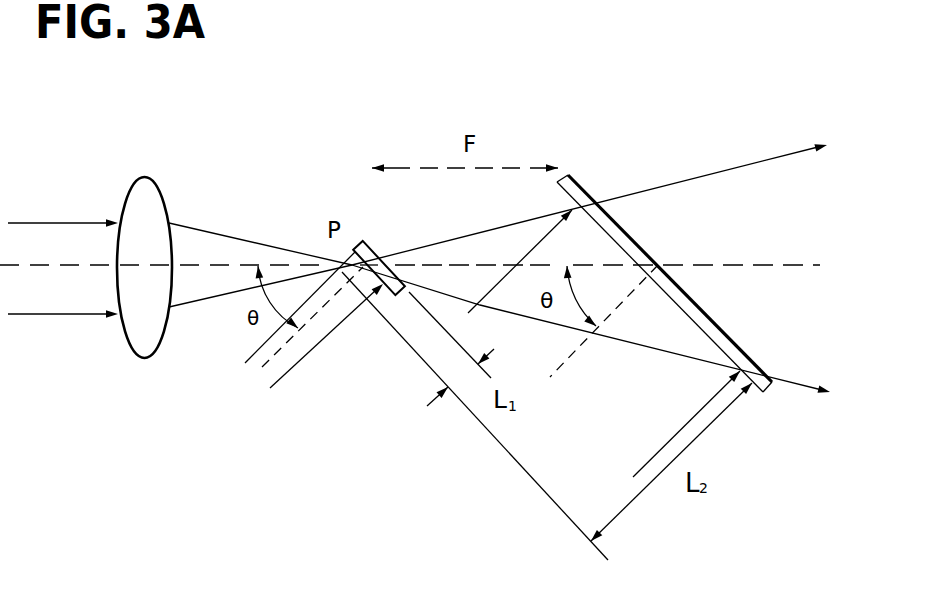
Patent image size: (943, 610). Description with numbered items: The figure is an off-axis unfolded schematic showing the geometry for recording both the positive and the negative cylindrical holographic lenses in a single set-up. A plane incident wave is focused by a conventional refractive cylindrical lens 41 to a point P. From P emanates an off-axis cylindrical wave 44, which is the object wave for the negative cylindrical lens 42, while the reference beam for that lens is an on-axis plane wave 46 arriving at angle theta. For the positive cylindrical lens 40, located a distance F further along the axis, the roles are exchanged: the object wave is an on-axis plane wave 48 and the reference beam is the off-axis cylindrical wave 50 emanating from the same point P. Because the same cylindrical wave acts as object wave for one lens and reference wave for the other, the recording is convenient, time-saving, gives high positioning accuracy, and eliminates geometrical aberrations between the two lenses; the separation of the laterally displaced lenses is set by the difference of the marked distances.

The positive cylindrical lens 40 is at (583, 190).
The refractive cylindrical lens 41 is at (144, 177).
The negative cylindrical lens 42 is at (365, 245).
The off-axis cylindrical wave 44 is at (210, 232).
The on-axis plane wave 46 is at (286, 376).
The on-axis plane wave 48 is at (663, 448).
The off-axis cylindrical wave 50 is at (472, 235).